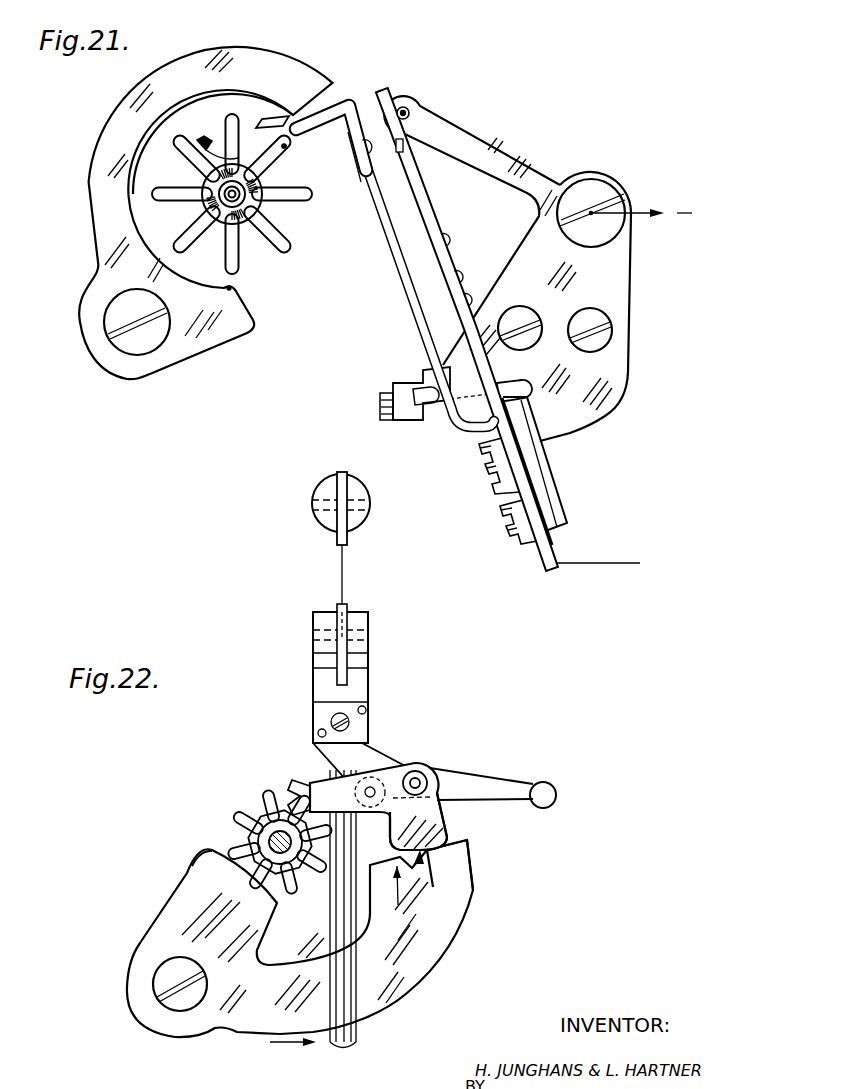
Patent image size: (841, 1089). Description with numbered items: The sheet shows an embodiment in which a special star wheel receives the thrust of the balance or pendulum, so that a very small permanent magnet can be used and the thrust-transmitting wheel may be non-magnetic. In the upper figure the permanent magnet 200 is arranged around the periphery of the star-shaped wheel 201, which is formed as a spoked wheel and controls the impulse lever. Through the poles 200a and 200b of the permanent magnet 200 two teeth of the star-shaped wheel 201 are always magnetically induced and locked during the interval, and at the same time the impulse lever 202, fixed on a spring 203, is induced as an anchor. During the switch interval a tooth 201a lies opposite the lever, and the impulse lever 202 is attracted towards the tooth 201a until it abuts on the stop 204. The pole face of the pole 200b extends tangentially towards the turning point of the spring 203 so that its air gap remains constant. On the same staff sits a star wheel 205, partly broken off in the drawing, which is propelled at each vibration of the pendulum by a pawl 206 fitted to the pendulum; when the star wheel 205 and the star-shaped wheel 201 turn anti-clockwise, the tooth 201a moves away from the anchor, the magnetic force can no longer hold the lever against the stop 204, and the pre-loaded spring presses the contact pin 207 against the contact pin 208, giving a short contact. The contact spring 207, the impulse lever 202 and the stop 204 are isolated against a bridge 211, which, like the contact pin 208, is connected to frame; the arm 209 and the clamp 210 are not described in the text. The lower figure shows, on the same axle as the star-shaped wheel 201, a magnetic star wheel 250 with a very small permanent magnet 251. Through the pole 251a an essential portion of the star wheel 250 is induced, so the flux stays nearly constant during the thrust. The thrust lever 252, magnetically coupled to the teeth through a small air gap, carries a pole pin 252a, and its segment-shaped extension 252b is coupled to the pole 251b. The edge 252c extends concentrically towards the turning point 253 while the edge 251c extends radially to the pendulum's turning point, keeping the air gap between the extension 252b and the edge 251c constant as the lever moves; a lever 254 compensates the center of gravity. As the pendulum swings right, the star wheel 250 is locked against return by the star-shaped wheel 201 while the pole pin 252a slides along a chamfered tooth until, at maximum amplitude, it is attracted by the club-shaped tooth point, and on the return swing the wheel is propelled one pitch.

In FIG. 21, the permanent magnet 200 is at (104, 167).
In FIG. 21, the pole of the permanent magnet 200a is at (231, 289).
In FIG. 21, the pole of the permanent magnet 200b is at (306, 90).
In FIG. 21, the star-shaped wheel 201 is at (250, 228).
In FIG. 21, the tooth of the countwheel 201a is at (286, 147).
In FIG. 21, the impulse lever 202 is at (334, 110).
In FIG. 21, the spring 203 is at (412, 193).
In FIG. 21, the stop 204 is at (372, 186).
In FIG. 21, the star wheel 205 is at (202, 145).
In FIG. 21, the pawl 206 is at (266, 120).
In FIG. 21, the contact pin 207 is at (404, 140).
In FIG. 21, the contact pin 208 is at (408, 110).
In FIG. 21, the lever arm 209 is at (420, 179).
In FIG. 21, the clamp 210 is at (400, 420).
In FIG. 21, the bridge 211 is at (609, 278).
In FIG. 22, the magnetic star wheel 250 is at (270, 833).
In FIG. 22, the permanent magnet 251 is at (426, 940).
In FIG. 22, the pole of the permanent magnet 251a is at (214, 871).
In FIG. 22, the pole of the permanent magnet 251b is at (454, 867).
In FIG. 22, the edge 251c is at (403, 935).
In FIG. 22, the thrust lever 252 is at (334, 795).
In FIG. 22, the pole pin 252a is at (283, 790).
In FIG. 22, the segment-shaped extension 252b is at (484, 762).
In FIG. 22, the edge of the lever 252c is at (421, 862).
In FIG. 22, the turning point 253 is at (428, 768).
In FIG. 22, the lever for compensating the center of gravity 254 is at (524, 781).